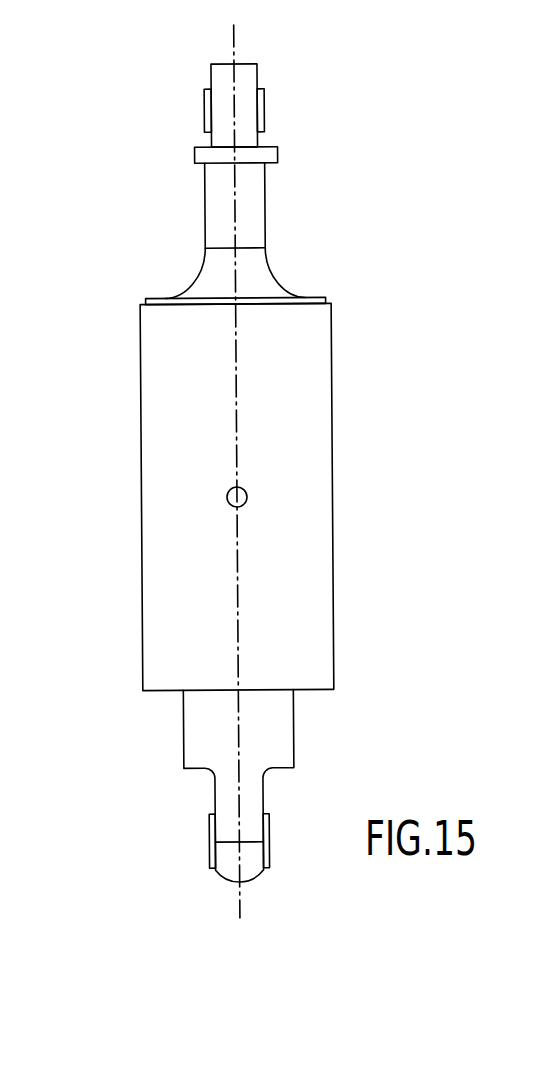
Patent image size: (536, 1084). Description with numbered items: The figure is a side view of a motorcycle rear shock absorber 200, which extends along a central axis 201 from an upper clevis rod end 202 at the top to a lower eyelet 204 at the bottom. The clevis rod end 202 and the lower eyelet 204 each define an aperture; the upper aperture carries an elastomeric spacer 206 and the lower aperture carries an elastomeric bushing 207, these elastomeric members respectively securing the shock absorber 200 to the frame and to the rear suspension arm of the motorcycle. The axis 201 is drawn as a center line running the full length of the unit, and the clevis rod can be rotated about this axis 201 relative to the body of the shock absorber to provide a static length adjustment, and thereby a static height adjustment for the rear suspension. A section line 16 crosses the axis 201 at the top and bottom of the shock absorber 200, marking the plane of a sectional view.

The section line 16 is at (317, 897).
The shock absorber 200 is at (368, 398).
The axis 201 is at (237, 591).
The upper clevis rod end 202 is at (249, 81).
The lower eyelet 204 is at (228, 848).
The elastomeric spacer 206 is at (263, 120).
The elastomeric bushing 207 is at (268, 822).